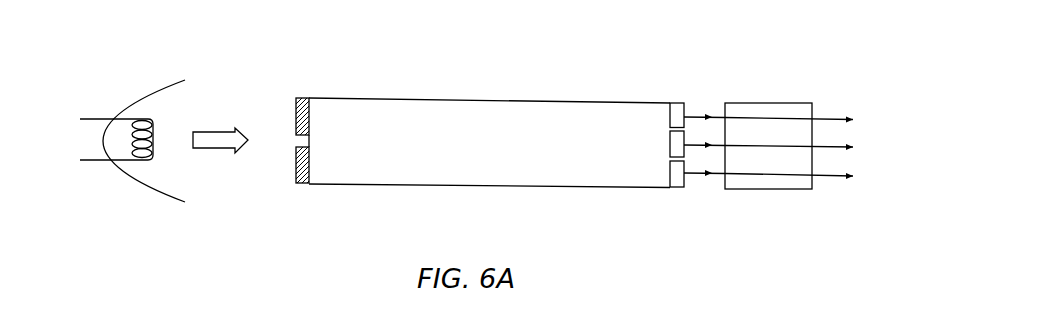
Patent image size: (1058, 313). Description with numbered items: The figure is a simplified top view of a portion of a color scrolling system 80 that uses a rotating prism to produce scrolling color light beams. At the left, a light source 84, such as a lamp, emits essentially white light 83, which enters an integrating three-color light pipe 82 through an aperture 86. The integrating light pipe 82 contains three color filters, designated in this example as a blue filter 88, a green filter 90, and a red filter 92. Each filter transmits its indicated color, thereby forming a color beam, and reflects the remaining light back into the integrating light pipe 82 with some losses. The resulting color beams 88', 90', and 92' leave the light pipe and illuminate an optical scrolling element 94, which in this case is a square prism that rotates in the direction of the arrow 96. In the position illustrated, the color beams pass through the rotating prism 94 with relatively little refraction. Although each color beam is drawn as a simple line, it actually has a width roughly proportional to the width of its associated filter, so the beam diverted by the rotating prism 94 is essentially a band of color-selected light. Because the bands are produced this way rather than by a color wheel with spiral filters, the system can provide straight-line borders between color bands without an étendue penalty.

The color scrolling system 80 is at (626, 48).
The integrating 3-color light pipe 82 is at (433, 98).
The white light 83 is at (218, 131).
The light source 84 is at (108, 68).
The aperture 86 is at (294, 140).
The blue color filter 88 is at (697, 86).
The green color filter 90 is at (677, 178).
The red color filter 92 is at (697, 204).
The optical scrolling element 94 is at (770, 102).
The arrow 96 is at (813, 95).
The blue color beam 88' is at (870, 105).
The green color beam 90' is at (870, 133).
The red color beam 92' is at (870, 162).